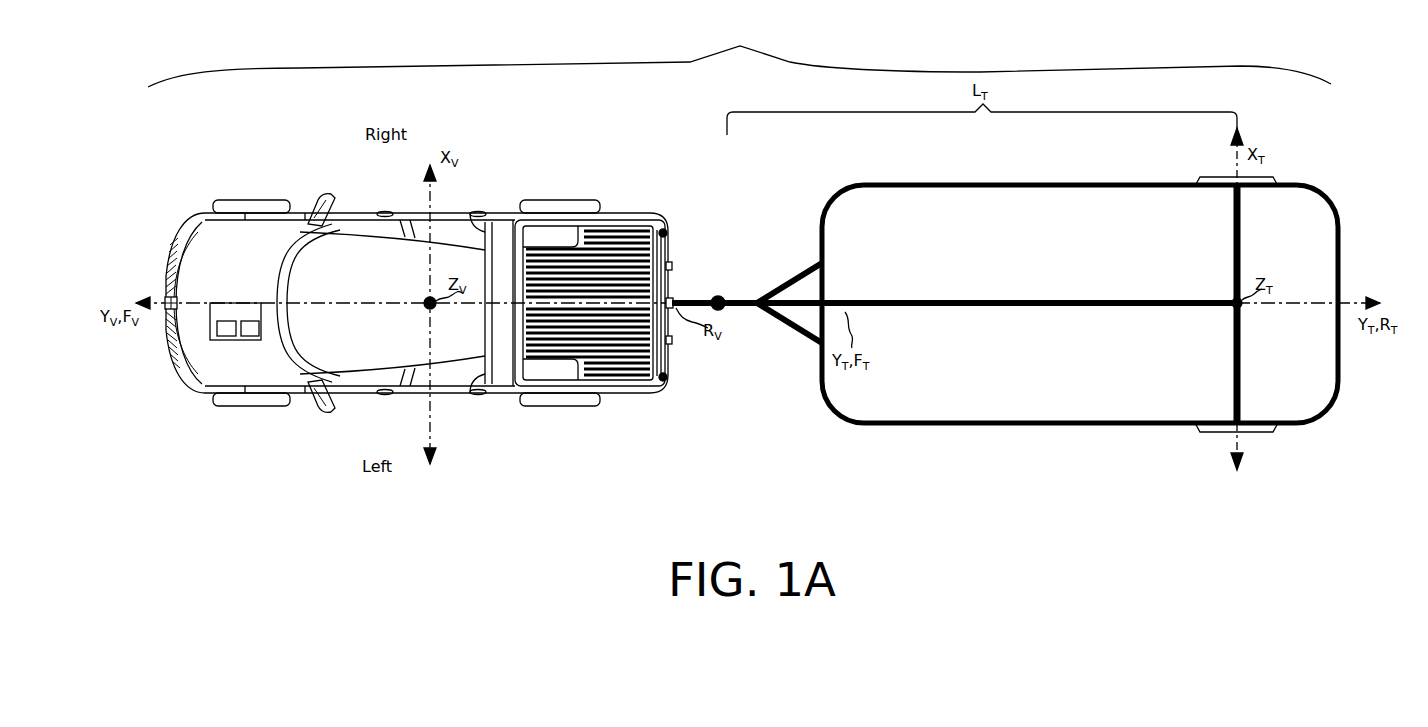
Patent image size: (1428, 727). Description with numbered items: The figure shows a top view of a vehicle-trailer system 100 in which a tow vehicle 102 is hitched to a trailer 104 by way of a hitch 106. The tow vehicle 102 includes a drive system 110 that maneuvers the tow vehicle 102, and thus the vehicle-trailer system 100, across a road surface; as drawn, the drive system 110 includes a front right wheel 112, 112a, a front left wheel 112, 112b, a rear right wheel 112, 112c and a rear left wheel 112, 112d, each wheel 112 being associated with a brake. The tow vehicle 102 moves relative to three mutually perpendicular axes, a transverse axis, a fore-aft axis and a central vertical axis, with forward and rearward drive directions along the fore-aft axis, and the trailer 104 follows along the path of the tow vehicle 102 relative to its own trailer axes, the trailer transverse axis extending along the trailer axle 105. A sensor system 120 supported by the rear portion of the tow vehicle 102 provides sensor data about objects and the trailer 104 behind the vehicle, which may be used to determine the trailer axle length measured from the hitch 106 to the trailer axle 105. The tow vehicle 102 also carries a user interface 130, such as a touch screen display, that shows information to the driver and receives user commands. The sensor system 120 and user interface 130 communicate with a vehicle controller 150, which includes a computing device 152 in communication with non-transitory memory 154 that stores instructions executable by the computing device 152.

The vehicle-trailer system 100 is at (739, 53).
The tow vehicle 102 is at (372, 291).
The trailer 104 is at (1020, 283).
The trailer axle 105 is at (1233, 352).
The hitch 106 is at (718, 296).
The drive system 110 is at (1200, 179).
The wheel 112 is at (1205, 433).
The front right wheel 112a is at (270, 200).
The front left wheel 112b is at (270, 406).
The rear right wheel 112c is at (583, 200).
The rear left wheel 112d is at (583, 406).
The sensor system 120 is at (665, 230).
The user interface 130 is at (165, 299).
The vehicle controller 150 is at (252, 319).
The computing device 152 is at (226, 336).
The non-transitory memory 154 is at (250, 336).